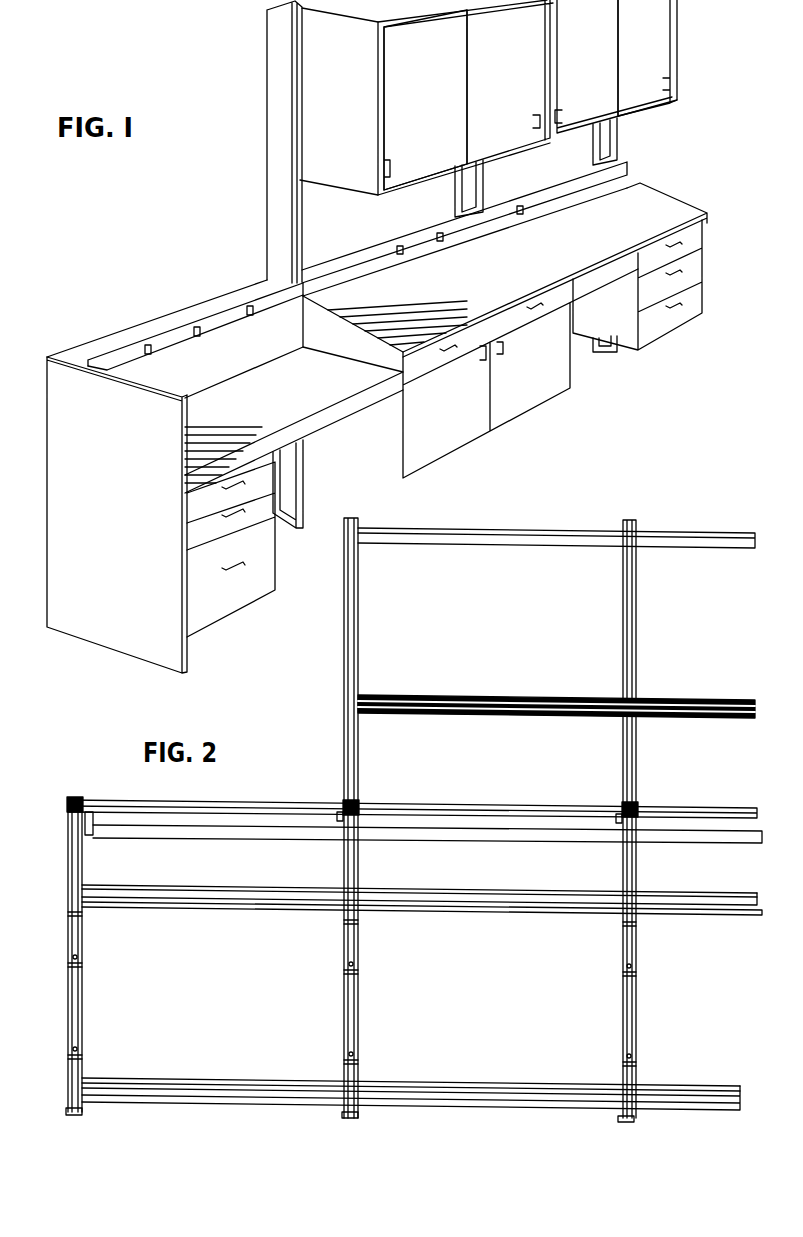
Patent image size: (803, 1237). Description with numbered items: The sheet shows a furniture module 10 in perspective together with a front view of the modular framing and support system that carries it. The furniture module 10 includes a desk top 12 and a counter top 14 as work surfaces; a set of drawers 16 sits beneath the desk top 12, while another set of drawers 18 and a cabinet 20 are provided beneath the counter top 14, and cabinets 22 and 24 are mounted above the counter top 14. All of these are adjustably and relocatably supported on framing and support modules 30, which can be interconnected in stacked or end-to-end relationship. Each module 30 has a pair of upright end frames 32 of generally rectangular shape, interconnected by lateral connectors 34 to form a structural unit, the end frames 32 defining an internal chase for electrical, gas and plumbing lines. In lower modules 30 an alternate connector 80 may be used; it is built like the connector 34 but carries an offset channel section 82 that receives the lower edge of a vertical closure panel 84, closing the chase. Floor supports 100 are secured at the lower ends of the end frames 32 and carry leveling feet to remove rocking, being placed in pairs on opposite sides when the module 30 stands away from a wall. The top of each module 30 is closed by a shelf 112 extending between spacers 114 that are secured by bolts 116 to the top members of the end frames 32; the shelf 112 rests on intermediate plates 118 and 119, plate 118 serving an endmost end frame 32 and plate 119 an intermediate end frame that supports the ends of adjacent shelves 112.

In FIG. 1, the furniture module 10 is at (239, 131).
In FIG. 1, the desk top 12 is at (293, 414).
In FIG. 1, the counter top 14 is at (636, 212).
In FIG. 1, the set of drawers 16 is at (226, 597).
In FIG. 1, the set of drawers 18 is at (650, 330).
In FIG. 1, the cabinet 20 is at (521, 396).
In FIG. 1, the cabinet 22 is at (441, 84).
In FIG. 1, the cabinet 24 is at (658, 50).
In FIG. 2, the framing and support module 30 is at (66, 831).
In FIG. 1, the upright end frame 32 is at (305, 490).
In FIG. 2, the upright end frame 32 is at (66, 873).
In FIG. 2, the lateral connector 34 is at (467, 530).
In FIG. 2, the connector 80 is at (203, 897).
In FIG. 2, the offset channel section 82 is at (461, 888).
In FIG. 1, the vertical closure panel 84 is at (207, 350).
In FIG. 2, the vertical closure panel 84 is at (84, 949).
In FIG. 2, the floor support 100 is at (84, 1069).
In FIG. 1, the shelf 112 is at (94, 350).
In FIG. 2, the shelf 112 is at (228, 810).
In FIG. 1, the spacer 114 is at (309, 282).
In FIG. 2, the spacer 114 is at (66, 801).
In FIG. 2, the bolt 116 is at (75, 797).
In FIG. 2, the intermediate plate 118 is at (100, 837).
In FIG. 2, the intermediate plate 119 is at (343, 820).